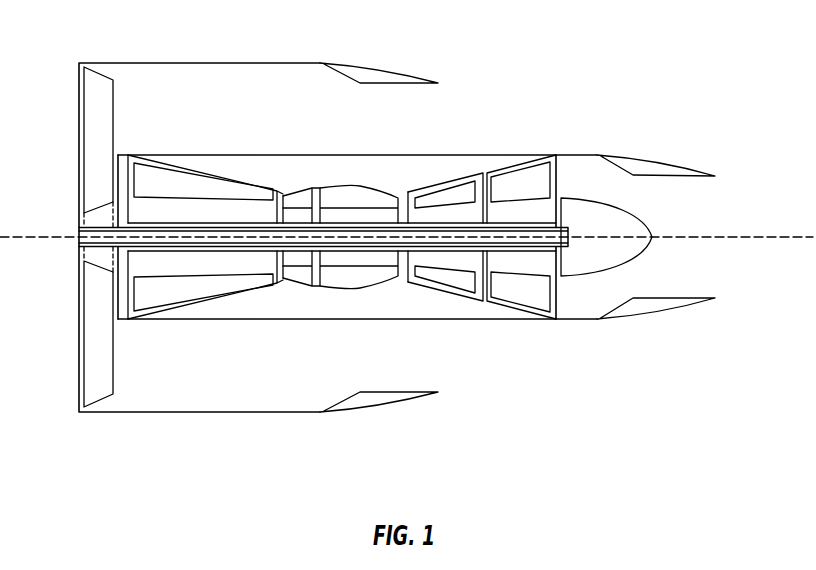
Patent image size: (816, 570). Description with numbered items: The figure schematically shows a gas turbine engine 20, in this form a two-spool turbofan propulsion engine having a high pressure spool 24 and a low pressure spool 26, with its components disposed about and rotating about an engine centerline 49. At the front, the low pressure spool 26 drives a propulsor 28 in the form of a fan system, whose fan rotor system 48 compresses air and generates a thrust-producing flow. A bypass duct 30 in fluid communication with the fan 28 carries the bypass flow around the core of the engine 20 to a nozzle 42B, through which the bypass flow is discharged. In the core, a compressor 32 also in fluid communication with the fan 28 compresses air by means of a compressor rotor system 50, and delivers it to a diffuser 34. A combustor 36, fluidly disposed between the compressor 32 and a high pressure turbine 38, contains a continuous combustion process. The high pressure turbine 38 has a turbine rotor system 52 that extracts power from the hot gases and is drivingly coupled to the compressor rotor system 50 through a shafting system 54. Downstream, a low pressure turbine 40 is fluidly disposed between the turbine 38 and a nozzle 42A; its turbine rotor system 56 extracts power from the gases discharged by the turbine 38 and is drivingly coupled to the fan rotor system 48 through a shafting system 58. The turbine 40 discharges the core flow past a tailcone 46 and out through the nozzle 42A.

The gas turbine engine 20 is at (648, 46).
The high pressure spool 24 is at (432, 120).
The low pressure spool 26 is at (508, 108).
The propulsor 28 is at (77, 261).
The bypass duct 30 is at (183, 398).
The compressor 32 is at (245, 293).
The diffuser 34 is at (295, 192).
The combustor 36 is at (355, 187).
The high pressure turbine 38 is at (443, 295).
The low pressure turbine 40 is at (513, 308).
The nozzle 42A is at (685, 310).
The nozzle 42B is at (388, 402).
The tailcone 46 is at (625, 212).
The fan rotor system 48 is at (100, 406).
The engine centerline 49 is at (725, 236).
The compressor rotor system 50 is at (228, 183).
The turbine rotor system 52 is at (462, 178).
The shafting system 54 is at (403, 252).
The turbine rotor system 56 is at (515, 172).
The shafting system 58 is at (496, 247).